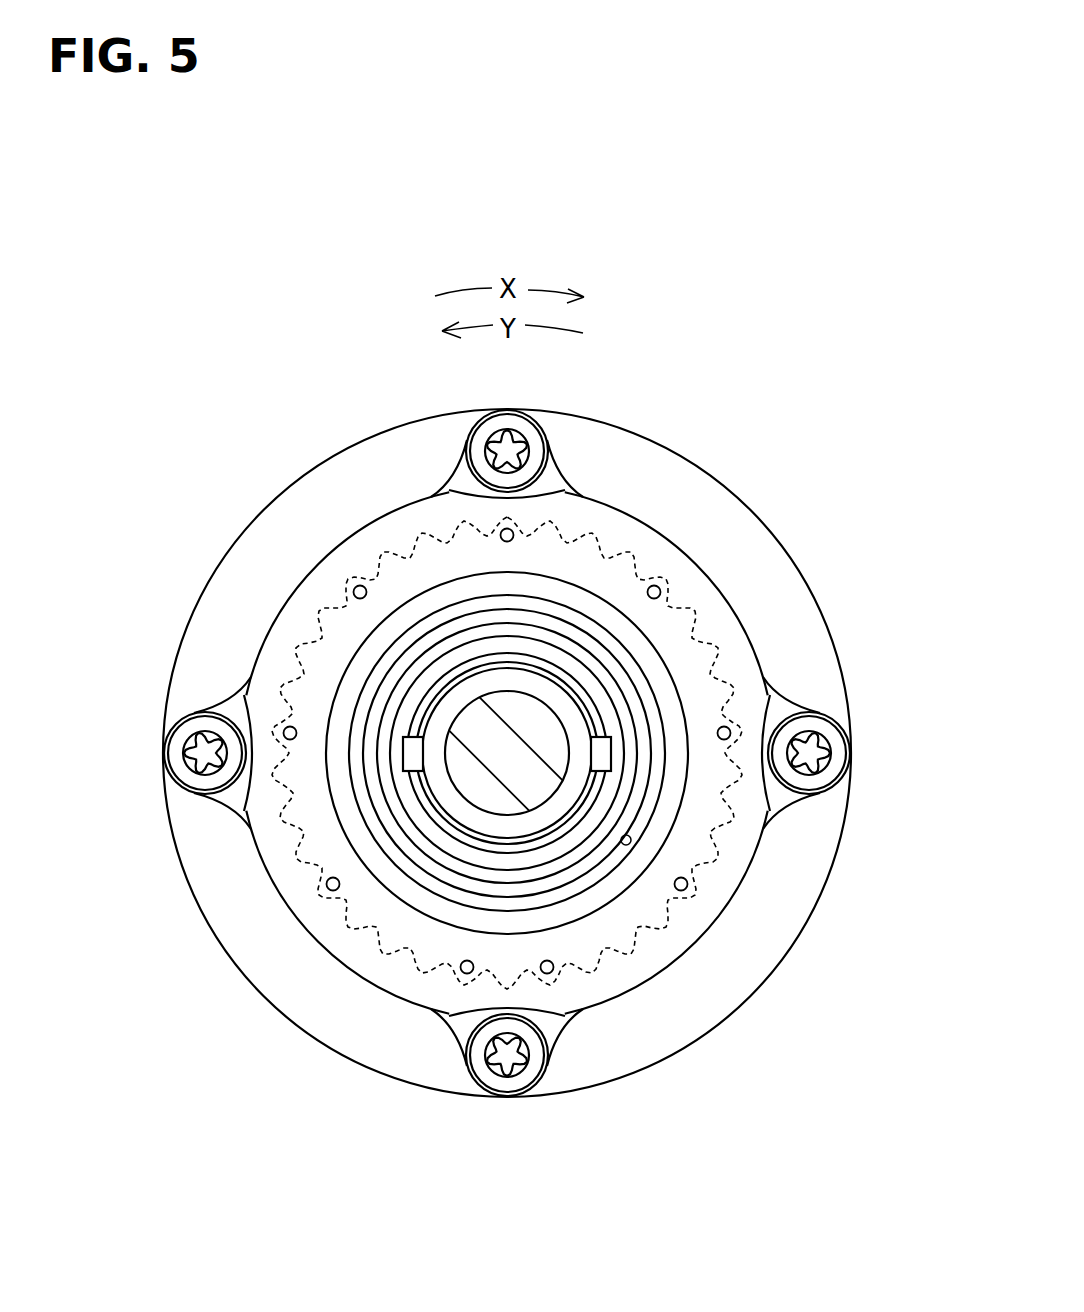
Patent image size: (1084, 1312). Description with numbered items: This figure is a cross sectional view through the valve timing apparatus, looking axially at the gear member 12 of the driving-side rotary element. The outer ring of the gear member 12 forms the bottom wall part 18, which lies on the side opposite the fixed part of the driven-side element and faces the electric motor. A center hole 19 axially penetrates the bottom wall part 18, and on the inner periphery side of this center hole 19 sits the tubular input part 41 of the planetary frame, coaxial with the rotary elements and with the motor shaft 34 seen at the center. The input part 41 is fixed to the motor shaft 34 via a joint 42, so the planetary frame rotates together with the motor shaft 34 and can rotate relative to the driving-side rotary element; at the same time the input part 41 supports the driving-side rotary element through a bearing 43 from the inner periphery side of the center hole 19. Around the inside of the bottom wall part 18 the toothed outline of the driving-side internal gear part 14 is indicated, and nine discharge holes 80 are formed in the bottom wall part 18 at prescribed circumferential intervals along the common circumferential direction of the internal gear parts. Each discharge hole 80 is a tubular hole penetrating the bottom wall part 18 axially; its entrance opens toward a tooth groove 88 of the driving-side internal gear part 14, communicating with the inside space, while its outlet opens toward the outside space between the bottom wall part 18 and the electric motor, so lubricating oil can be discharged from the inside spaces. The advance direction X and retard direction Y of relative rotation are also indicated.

The gear member 12 is at (706, 458).
The driving-side internal gear part 14 is at (270, 818).
The bottom wall part 18 is at (727, 640).
The center hole 19 is at (632, 845).
The motor shaft 34 is at (535, 800).
The input part 41 is at (593, 815).
The joint 42 is at (378, 935).
The bearing 43 is at (600, 857).
The discharge holes 80 is at (512, 530).
The tooth groove 88 is at (500, 518).